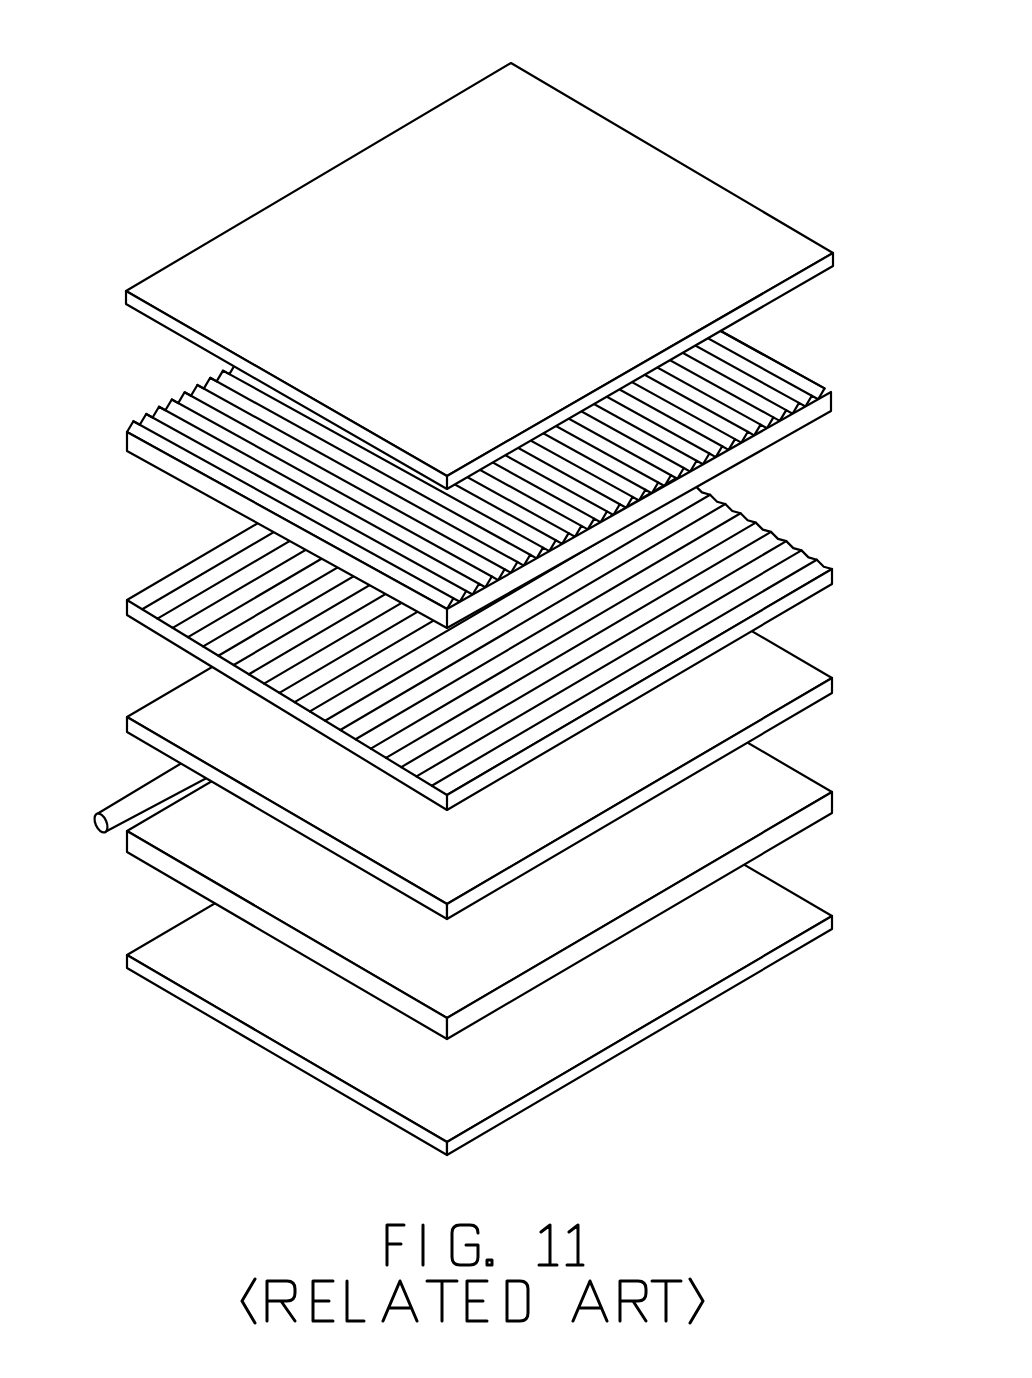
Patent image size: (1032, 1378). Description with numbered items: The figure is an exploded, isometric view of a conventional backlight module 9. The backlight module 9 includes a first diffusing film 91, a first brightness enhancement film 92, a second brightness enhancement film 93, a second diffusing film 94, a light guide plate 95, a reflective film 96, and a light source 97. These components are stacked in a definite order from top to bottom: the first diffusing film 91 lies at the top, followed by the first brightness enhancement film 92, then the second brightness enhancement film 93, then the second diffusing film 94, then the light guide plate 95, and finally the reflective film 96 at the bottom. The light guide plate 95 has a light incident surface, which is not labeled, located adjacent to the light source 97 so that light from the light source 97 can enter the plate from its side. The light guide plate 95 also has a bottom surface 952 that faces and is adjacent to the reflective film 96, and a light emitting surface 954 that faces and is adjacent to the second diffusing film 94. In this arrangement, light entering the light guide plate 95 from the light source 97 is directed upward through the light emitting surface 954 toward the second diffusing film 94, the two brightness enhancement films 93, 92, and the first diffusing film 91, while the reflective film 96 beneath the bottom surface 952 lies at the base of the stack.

The backlight module 9 is at (462, 27).
The first diffusing film 91 is at (793, 250).
The first brightness enhancement film 92 is at (790, 391).
The second brightness enhancement film 93 is at (830, 573).
The second diffusing film 94 is at (782, 685).
The light guide plate 95 is at (473, 822).
The bottom surface 952 is at (138, 867).
The light emitting surface 954 is at (787, 798).
The reflective film 96 is at (786, 903).
The light source 97 is at (145, 795).